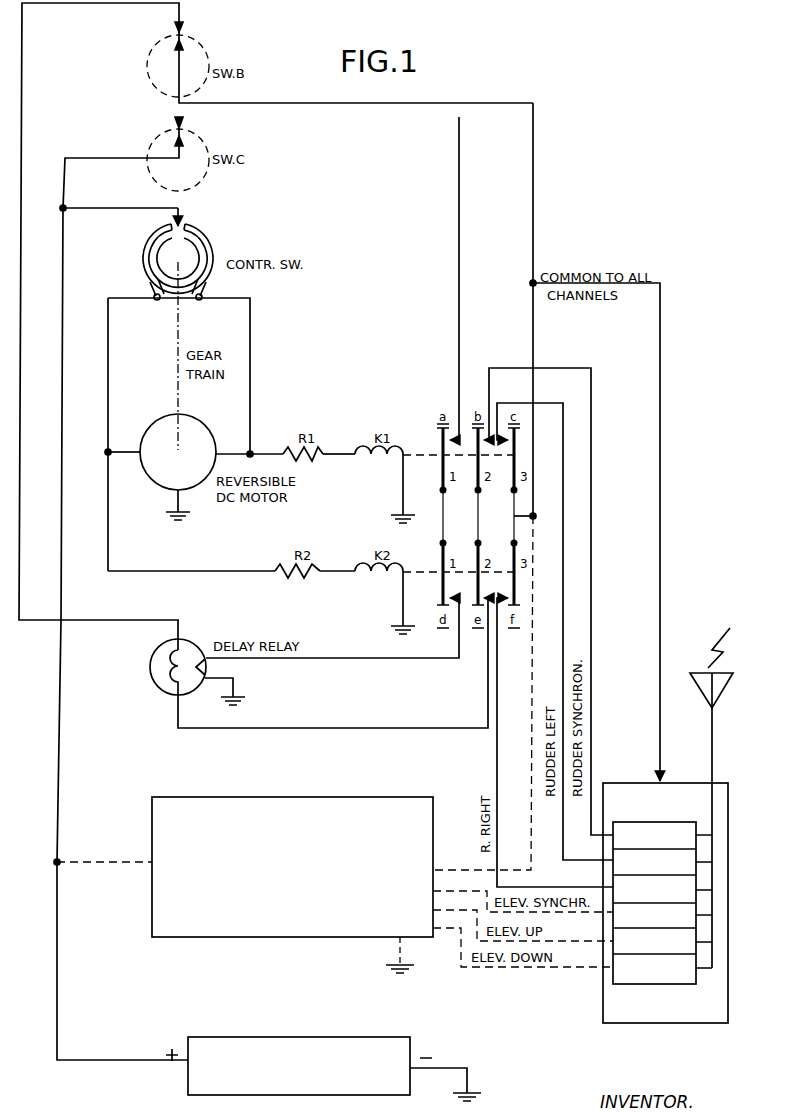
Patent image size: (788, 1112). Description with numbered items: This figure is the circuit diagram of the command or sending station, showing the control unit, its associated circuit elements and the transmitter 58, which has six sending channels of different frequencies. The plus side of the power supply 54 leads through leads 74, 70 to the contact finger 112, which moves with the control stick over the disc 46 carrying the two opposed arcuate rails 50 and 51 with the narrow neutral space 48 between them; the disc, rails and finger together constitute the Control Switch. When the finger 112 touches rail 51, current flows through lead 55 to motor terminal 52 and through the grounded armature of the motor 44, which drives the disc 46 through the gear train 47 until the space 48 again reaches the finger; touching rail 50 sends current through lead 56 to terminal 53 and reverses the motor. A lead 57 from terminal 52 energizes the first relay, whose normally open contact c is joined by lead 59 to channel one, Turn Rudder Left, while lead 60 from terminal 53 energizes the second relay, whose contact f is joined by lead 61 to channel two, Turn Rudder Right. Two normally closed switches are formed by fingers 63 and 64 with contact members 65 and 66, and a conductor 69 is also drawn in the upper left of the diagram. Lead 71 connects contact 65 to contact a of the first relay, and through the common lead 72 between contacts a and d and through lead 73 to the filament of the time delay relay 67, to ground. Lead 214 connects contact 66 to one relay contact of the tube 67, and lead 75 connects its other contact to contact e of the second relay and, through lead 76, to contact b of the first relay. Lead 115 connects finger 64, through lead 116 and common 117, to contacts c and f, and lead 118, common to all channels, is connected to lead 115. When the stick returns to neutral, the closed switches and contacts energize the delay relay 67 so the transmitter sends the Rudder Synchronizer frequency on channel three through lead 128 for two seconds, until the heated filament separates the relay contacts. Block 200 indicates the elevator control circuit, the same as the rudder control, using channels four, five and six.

The lead 214 is at (21, 432).
The contact member 66 is at (182, 30).
The contact finger 64 is at (182, 44).
The contact finger 63 is at (176, 135).
The contact member 65 is at (183, 124).
The conductor 69 is at (86, 157).
The lead 74 is at (63, 434).
The lead 70 is at (88, 207).
The contact finger 112 is at (182, 210).
The disc 46 is at (206, 242).
The space 48 is at (178, 244).
The rail 50 is at (152, 252).
The rail 51 is at (207, 272).
The lead 56 is at (108, 359).
The lead 55 is at (251, 357).
The gear train 47 is at (177, 388).
The motor 44 is at (150, 481).
The motor terminal 53 is at (106, 454).
The motor terminal 52 is at (252, 450).
The lead 57 is at (336, 452).
The lead 60 is at (223, 573).
The common lead 72 is at (445, 512).
The lead 76 is at (480, 508).
The common 117 is at (516, 504).
The lead 116 is at (520, 522).
The lead 71 is at (461, 300).
The lead 115 is at (534, 194).
The lead 118 is at (662, 434).
The lead 128 is at (592, 480).
The lead 59 is at (564, 564).
The lead 61 is at (498, 764).
The time delay relay 67 is at (153, 678).
The lead 73 is at (349, 661).
The lead 75 is at (336, 728).
The block 200 is at (312, 792).
The power supply 54 is at (320, 1038).
The radio transmitter 58 is at (672, 782).